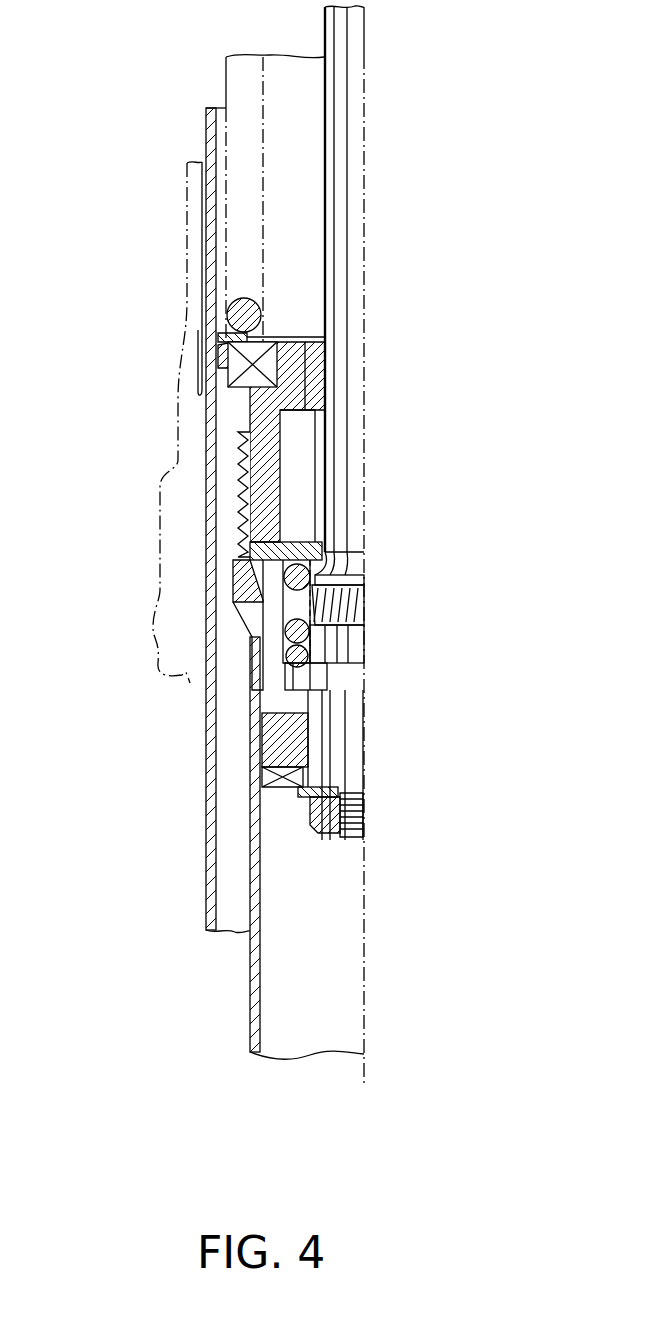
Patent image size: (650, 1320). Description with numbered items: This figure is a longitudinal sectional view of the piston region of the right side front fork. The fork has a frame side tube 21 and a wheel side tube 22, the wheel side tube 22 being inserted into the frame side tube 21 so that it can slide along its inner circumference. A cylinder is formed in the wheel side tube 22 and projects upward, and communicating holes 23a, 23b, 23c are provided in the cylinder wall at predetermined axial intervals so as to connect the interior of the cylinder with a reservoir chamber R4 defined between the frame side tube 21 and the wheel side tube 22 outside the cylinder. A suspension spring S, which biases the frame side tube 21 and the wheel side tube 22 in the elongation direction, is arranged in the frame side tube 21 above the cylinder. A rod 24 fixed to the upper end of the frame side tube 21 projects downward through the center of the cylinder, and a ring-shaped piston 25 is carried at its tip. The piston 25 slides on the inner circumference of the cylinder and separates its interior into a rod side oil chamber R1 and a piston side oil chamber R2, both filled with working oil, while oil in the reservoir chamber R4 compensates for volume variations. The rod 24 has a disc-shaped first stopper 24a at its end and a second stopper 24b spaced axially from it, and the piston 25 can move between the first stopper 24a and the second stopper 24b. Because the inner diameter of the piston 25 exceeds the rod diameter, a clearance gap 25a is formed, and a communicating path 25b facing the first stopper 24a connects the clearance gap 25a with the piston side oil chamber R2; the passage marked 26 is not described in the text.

The frame side tube 21 is at (177, 462).
The wheel side tube 22 is at (212, 134).
The suspension spring S is at (232, 318).
The communicating hole 23a is at (233, 612).
The communicating hole 23b is at (250, 828).
The communicating hole 23c is at (255, 1026).
The rod 24 is at (337, 33).
The first stopper 24a is at (302, 790).
The second stopper 24b is at (310, 675).
The piston 25 is at (277, 793).
The clearance gap 25a is at (313, 745).
The communicating path 25b is at (290, 778).
The passage 26 is at (293, 704).
The rod side oil chamber R1 is at (280, 680).
The piston side oil chamber R2 is at (333, 1015).
The reservoir chamber R4 is at (233, 908).